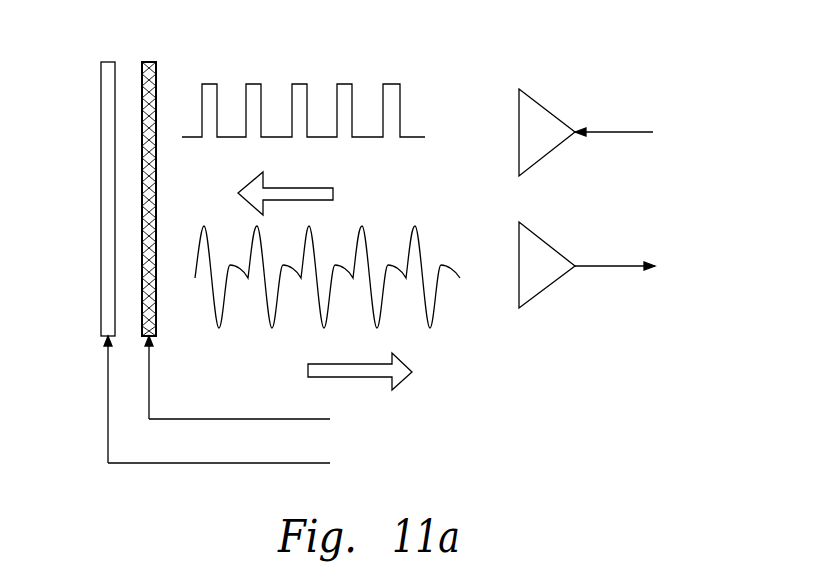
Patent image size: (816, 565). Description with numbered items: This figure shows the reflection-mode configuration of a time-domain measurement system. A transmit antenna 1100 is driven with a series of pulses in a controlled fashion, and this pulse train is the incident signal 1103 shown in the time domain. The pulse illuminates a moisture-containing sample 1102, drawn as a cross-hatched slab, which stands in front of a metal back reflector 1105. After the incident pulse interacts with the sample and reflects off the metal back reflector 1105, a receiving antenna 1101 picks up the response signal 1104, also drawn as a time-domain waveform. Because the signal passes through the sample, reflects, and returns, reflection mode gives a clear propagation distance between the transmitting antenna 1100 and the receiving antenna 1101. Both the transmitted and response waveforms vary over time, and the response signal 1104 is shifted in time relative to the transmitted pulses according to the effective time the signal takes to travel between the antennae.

The antenna 1100 is at (552, 150).
The receiving antenna 1101 is at (552, 285).
The moisture-containing sample 1102 is at (157, 88).
The incident signal (time domain) 1103 is at (303, 85).
The response signal 1104 is at (435, 322).
The metal back reflector 1105 is at (102, 88).